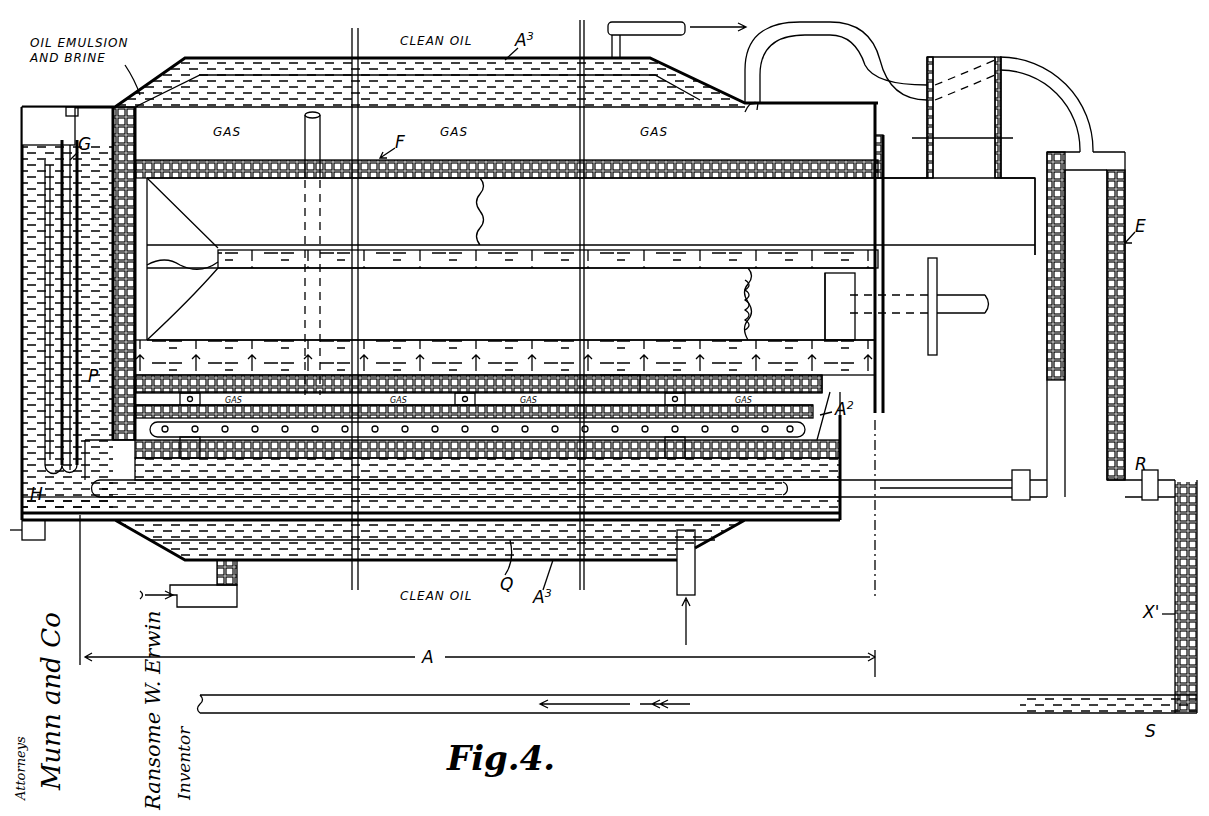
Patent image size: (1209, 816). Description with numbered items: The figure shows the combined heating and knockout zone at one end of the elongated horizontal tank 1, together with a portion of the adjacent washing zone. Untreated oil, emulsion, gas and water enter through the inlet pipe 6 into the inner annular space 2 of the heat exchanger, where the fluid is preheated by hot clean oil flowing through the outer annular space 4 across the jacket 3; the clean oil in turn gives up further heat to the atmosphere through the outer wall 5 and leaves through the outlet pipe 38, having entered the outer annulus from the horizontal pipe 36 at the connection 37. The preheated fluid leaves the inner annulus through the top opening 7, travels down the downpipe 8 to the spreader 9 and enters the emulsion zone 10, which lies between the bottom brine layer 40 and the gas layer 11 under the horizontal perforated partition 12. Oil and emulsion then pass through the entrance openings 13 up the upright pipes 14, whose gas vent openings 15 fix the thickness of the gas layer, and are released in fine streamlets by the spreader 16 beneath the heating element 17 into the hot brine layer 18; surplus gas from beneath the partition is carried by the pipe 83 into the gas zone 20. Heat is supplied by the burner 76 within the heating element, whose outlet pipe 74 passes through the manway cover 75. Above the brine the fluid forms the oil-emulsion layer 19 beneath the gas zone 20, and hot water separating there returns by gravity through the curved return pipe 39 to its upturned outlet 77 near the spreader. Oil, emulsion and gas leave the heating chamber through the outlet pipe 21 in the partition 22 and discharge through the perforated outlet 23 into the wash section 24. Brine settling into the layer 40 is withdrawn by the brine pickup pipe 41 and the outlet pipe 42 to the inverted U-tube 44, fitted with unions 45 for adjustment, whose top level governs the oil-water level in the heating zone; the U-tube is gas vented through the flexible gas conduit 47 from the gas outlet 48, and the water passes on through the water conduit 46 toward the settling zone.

The horizontal tank 1 is at (738, 521).
The inner annular space 2 is at (362, 110).
The jacket 3 is at (325, 75).
The outer annular space 4 is at (375, 60).
The outer jacket wall 5 is at (255, 58).
The inlet pipe 6 is at (677, 590).
The top opening 7 is at (126, 108).
The downpipe 8 is at (150, 290).
The spreader 9 is at (372, 395).
The emulsion zone 10 is at (128, 520).
The gas layer 11 is at (270, 405).
The horizontal perforated partition 12 is at (760, 395).
The entrance openings 13 is at (665, 470).
The upright pipes 14 is at (205, 405).
The gas vent openings 15 is at (185, 393).
The spreader 16 is at (600, 380).
The heating element 17 is at (591, 259).
The brine layer 18 is at (246, 250).
The oil-emulsion layer 19 is at (148, 160).
The gas zone 20 is at (597, 305).
The outlet pipe 21 is at (42, 145).
The partition 22 is at (72, 107).
The perforated outlet 23 is at (40, 540).
The wash zone section 24 is at (35, 540).
The horizontal pipe 36 is at (197, 608).
The inlet to outer annular space 37 is at (238, 570).
The outlet pipe 38 is at (650, 28).
The hot water return pipe 39 is at (106, 520).
The brine layer 40 is at (765, 500).
The brine pickup pipe 41 is at (328, 500).
The outlet pipe 42 is at (972, 499).
The inverted U-tube 44 is at (1126, 322).
The unions 45 is at (1150, 498).
The water conduit 46 is at (843, 715).
The gas conduit 47 is at (1040, 68).
The gas outlet 48 is at (765, 92).
The outlet pipe 74 is at (990, 100).
The manway cover 75 is at (883, 162).
The burner 76 is at (855, 305).
The outlet of return pipe 77 is at (118, 545).
The surplus gas pipe 83 is at (305, 140).